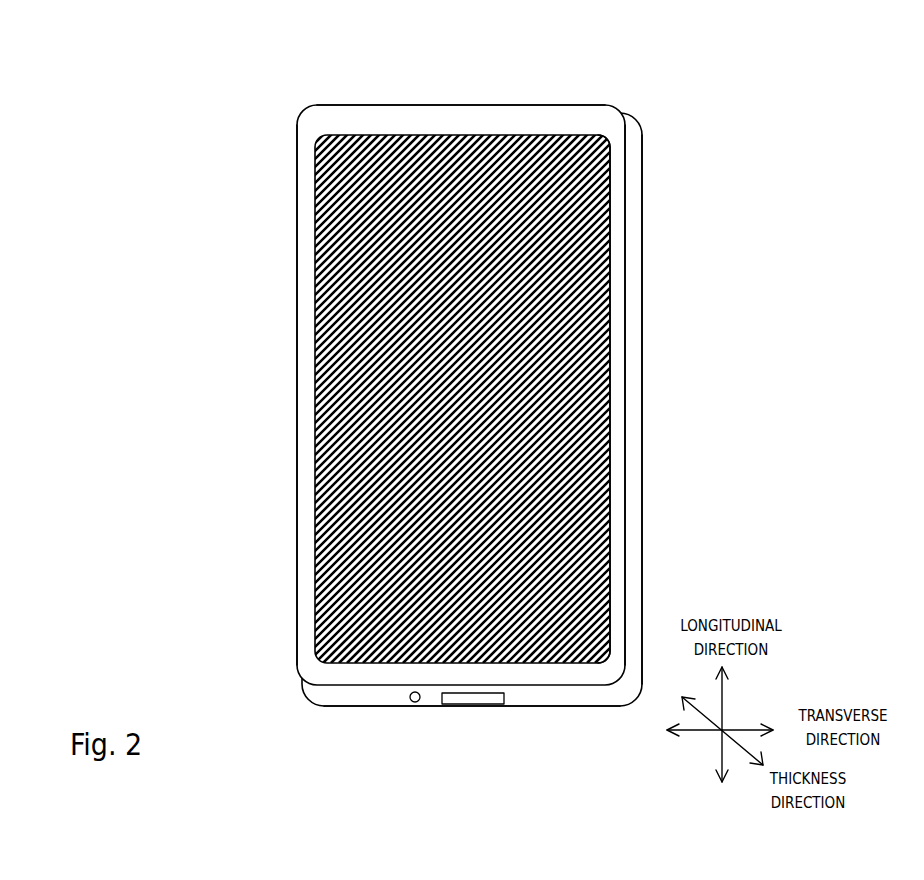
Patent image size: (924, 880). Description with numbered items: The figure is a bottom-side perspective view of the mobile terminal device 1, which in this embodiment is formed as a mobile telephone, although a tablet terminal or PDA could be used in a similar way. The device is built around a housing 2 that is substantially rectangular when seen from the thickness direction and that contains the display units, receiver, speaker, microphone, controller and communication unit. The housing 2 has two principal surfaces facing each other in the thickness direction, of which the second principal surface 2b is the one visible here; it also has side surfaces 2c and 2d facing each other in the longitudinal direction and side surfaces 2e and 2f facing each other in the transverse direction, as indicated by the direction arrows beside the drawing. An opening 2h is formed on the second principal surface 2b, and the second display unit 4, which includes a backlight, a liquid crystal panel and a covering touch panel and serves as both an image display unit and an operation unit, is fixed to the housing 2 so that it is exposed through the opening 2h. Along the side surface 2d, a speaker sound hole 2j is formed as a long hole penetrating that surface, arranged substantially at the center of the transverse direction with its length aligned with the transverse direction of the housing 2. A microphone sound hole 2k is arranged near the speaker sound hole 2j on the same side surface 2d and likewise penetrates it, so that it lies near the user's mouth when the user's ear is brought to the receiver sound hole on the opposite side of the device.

The mobile terminal device 1 is at (769, 76).
The housing 2 is at (643, 359).
The second display unit 4 is at (610, 298).
The second principal surface 2b is at (617, 453).
The side surface 2c is at (450, 105).
The side surface 2d is at (357, 704).
The side surface 2e is at (632, 555).
The side surface 2f is at (298, 378).
The opening 2h is at (610, 242).
The speaker sound hole 2j is at (478, 704).
The microphone sound hole 2k is at (415, 704).